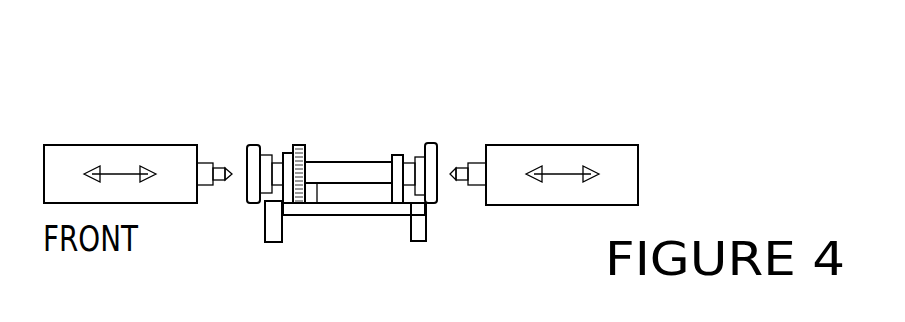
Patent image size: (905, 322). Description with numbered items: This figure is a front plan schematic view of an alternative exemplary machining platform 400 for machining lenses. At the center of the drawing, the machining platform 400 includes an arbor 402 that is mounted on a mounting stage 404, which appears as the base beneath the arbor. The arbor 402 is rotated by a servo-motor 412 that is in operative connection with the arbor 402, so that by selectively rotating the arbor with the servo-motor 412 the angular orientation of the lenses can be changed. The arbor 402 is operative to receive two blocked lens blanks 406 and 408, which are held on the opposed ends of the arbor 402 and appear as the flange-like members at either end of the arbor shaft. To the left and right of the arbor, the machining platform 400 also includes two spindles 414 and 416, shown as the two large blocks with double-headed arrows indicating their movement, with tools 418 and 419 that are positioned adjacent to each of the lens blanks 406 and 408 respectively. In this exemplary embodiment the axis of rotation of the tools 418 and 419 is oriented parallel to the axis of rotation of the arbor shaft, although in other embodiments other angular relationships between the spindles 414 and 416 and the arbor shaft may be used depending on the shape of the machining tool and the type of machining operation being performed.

The machining platform 400 is at (466, 82).
The arbor 402 is at (307, 146).
The mounting stage 404 is at (333, 215).
The blocked lens blank 406 is at (253, 146).
The blocked lens blank 408 is at (430, 146).
The servo-motor 412 is at (373, 197).
The spindle 414 is at (205, 186).
The spindle 416 is at (481, 186).
The tool 418 is at (218, 186).
The tool 419 is at (462, 186).